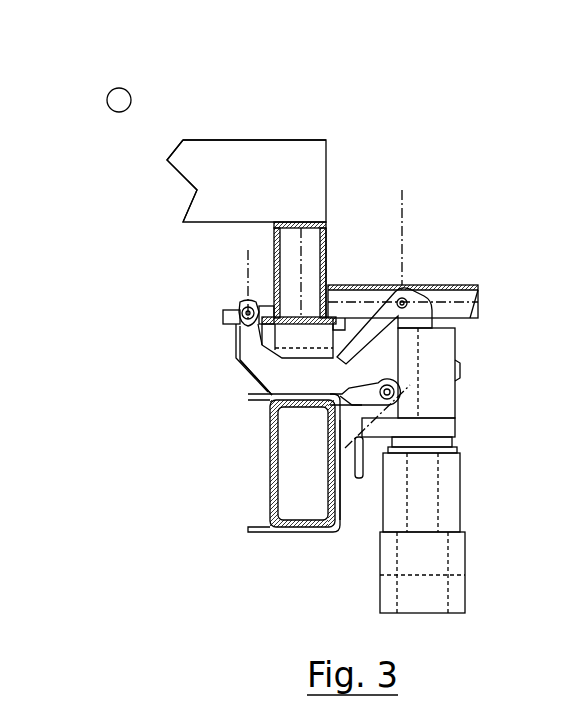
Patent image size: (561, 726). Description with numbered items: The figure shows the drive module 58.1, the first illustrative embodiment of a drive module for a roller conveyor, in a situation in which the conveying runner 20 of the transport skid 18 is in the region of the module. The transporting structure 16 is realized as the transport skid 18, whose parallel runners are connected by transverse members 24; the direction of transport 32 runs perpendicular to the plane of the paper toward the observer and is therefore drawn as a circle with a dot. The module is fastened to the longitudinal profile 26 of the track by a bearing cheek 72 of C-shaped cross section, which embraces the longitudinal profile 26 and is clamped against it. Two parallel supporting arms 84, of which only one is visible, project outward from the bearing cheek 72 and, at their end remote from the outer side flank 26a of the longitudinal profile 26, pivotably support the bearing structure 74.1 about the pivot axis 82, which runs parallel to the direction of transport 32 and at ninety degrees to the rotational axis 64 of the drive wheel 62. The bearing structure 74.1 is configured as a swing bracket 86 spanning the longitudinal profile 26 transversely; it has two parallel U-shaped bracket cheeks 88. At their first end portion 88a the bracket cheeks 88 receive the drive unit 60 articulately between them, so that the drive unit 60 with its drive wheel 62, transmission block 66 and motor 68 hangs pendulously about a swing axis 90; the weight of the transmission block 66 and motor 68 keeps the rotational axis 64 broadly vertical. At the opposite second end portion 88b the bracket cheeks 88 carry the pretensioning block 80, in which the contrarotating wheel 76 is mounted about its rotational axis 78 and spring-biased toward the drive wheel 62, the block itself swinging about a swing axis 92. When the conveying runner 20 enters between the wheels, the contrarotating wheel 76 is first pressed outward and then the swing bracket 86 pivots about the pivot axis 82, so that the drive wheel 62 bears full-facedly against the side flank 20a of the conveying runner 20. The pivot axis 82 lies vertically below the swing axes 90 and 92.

The drive module 58.1 is at (374, 80).
The transporting structure 16 is at (230, 140).
The transport skid 18 is at (288, 152).
The transverse members 24 is at (198, 180).
The direction of transport 32 is at (119, 100).
The conveying runner 20 is at (273, 236).
The side flank of conveying runner 20a is at (327, 248).
The rotational axis of contrarotating wheel 78 is at (248, 258).
The pretensioning block 80 is at (228, 315).
The second end portion 88b is at (243, 309).
The contrarotating wheel 76 is at (240, 328).
The swing axis of contrarotating wheel 92 is at (250, 362).
The bearing structure 74.1 is at (268, 380).
The swing bracket 86 is at (264, 384).
The drive wheel 62 is at (476, 294).
The rotational axis of drive wheel 64 is at (403, 200).
The first end portion 88a is at (406, 296).
The bracket cheeks 88 is at (382, 348).
The swing axis of drive unit 90 is at (480, 290).
The transmission block 66 is at (430, 366).
The pivot axis 82 is at (400, 402).
The supporting arms 84 is at (445, 432).
The longitudinal profile 26 is at (288, 500).
The bearing cheek 72 is at (253, 400).
The outer side flank 26a is at (340, 505).
The motor 68 is at (456, 490).
The drive unit 60 is at (480, 562).